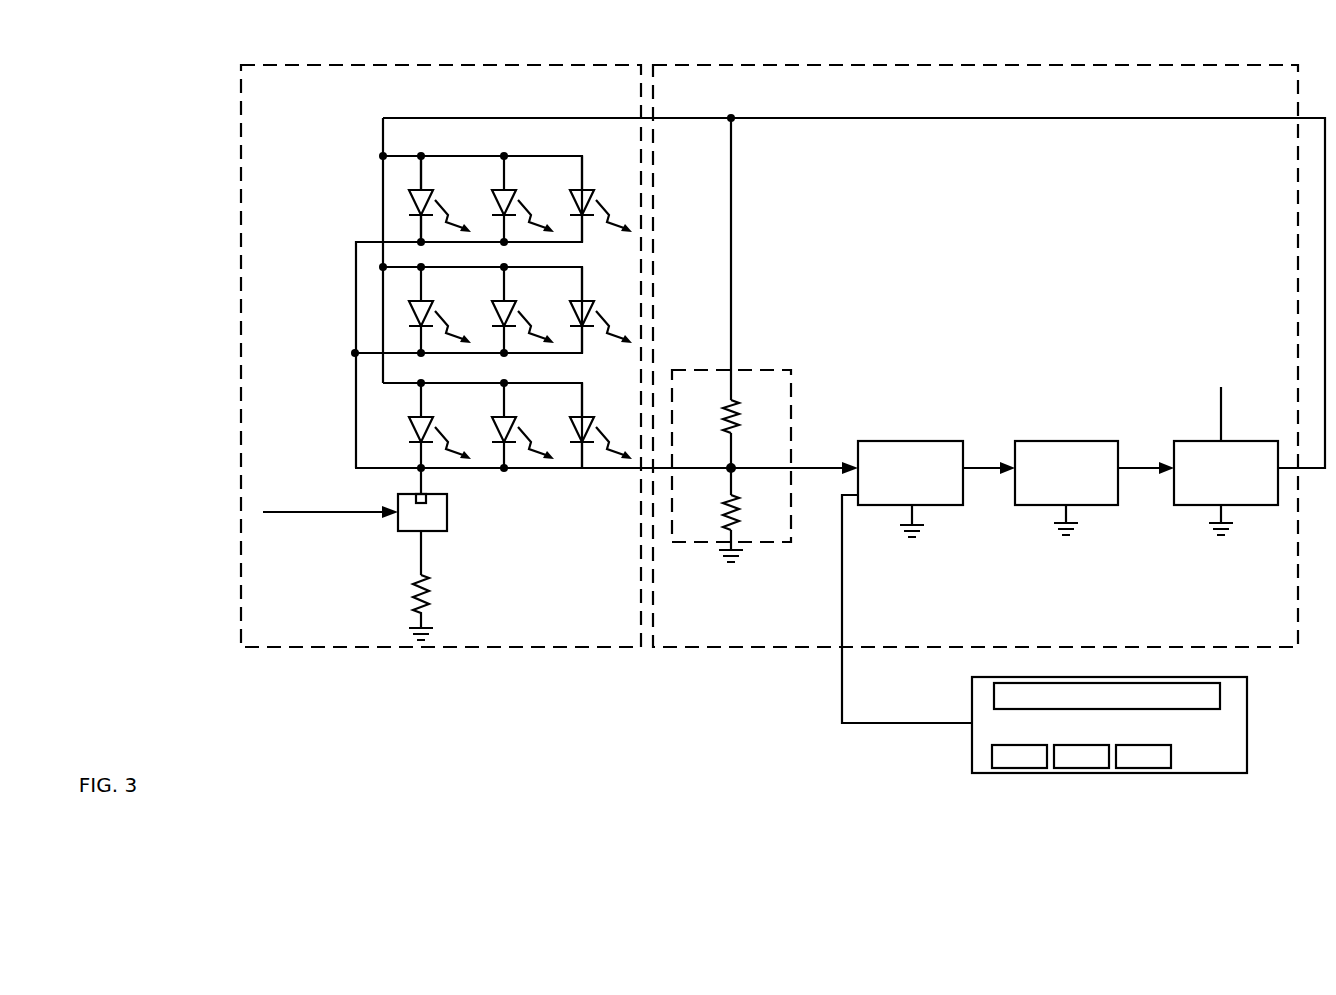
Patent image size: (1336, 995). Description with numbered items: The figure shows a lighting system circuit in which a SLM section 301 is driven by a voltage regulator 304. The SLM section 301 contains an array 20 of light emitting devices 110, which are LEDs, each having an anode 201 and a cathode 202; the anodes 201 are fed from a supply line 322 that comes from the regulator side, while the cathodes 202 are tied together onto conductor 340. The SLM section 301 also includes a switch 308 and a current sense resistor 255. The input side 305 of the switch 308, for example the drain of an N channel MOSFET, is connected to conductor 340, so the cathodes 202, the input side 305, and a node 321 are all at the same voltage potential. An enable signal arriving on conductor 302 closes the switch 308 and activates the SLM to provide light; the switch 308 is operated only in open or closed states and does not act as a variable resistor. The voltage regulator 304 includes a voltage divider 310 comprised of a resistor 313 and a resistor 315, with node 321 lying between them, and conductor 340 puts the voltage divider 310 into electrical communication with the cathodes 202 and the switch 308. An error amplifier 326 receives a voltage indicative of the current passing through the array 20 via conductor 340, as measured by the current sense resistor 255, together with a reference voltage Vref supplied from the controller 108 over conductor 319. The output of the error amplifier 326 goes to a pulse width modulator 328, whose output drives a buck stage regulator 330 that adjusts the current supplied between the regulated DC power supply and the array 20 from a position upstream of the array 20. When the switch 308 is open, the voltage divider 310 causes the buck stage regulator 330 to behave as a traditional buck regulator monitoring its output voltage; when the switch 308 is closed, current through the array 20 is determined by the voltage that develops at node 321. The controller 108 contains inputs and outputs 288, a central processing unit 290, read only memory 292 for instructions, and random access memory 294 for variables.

The SLM section 301 is at (344, 66).
The voltage regulator 304 is at (958, 66).
The supply line 322 is at (548, 118).
The array 20 is at (354, 152).
The anode 201 is at (420, 200).
The cathode 202 is at (420, 217).
The light emitting device 110 is at (435, 192).
The conductor 340 is at (626, 469).
The input side 305 is at (418, 496).
The switch 308 is at (450, 528).
The conductor 302 is at (298, 513).
The current sense resistor 255 is at (428, 590).
The voltage divider 310 is at (710, 370).
The resistor 313 is at (718, 428).
The resistor 315 is at (718, 527).
The node 321 is at (734, 467).
The error amplifier 326 is at (910, 441).
The pulse width modulator 328 is at (1065, 441).
The buck stage regulator 330 is at (1190, 441).
The conductor 319 is at (900, 722).
The controller 108 is at (1109, 725).
The inputs and outputs 288 is at (1107, 696).
The central processing unit 290 is at (1019, 757).
The read only memory 292 is at (1081, 757).
The random access memory 294 is at (1143, 757).